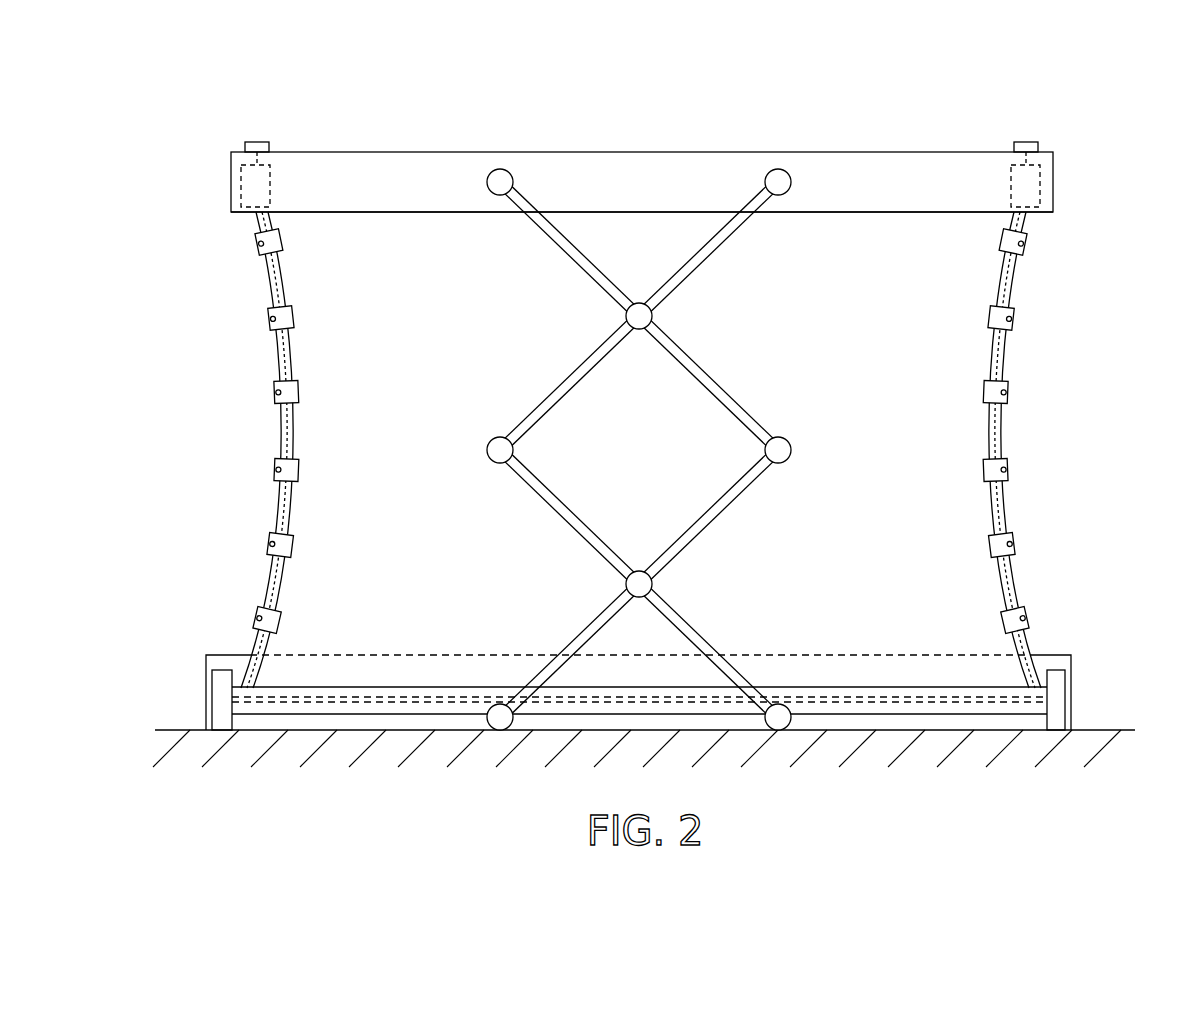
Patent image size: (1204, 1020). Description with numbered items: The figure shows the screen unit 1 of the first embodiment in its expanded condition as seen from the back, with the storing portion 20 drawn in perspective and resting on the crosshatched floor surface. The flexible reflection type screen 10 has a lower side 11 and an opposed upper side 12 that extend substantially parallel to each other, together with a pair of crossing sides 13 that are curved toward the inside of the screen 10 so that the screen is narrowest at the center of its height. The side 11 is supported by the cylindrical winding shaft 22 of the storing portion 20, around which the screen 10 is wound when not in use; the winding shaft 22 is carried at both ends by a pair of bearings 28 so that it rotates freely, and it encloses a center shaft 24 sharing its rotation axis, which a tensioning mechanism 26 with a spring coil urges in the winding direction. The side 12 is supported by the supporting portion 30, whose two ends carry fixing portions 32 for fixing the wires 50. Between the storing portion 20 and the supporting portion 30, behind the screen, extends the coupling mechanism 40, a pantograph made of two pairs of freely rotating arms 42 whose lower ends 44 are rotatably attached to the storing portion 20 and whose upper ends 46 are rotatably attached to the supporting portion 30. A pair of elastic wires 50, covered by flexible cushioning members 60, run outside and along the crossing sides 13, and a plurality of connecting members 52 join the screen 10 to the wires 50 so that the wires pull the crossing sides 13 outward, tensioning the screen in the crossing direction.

The screen unit 1 is at (1137, 115).
The screen 10 is at (975, 363).
The side 11 is at (845, 690).
The side 12 is at (798, 213).
The crossing sides 13 is at (298, 447).
The storing portion 20 is at (1074, 660).
The winding shaft 22 is at (897, 687).
The center shaft 24 is at (639, 654).
The tensioning mechanism 26 is at (406, 690).
The bearings 28 is at (215, 690).
The supporting portion 30 is at (1055, 186).
The fixing portions 32 is at (259, 134).
The coupling mechanism 40 is at (710, 343).
The arms 42 is at (740, 404).
The lower ends 44 is at (500, 726).
The upper ends 46 is at (486, 182).
The wires 50 is at (637, 450).
The connecting members 52 is at (272, 318).
The cushioning members 60 is at (283, 423).